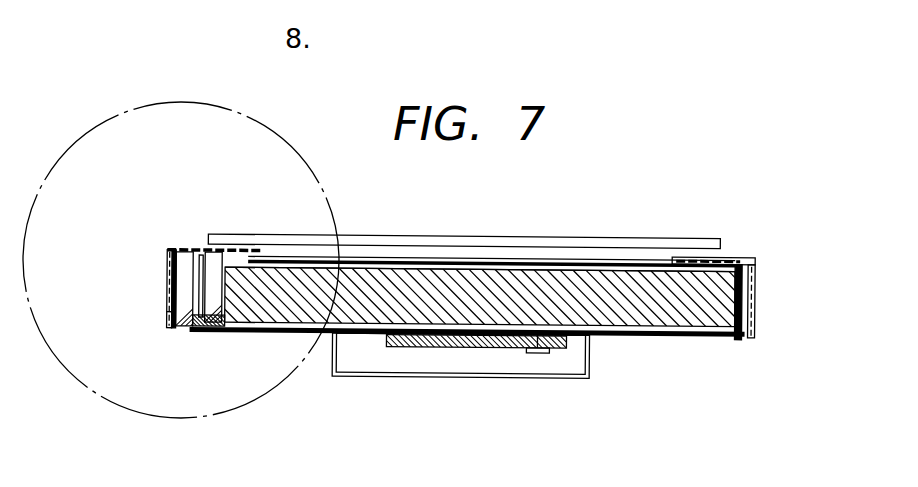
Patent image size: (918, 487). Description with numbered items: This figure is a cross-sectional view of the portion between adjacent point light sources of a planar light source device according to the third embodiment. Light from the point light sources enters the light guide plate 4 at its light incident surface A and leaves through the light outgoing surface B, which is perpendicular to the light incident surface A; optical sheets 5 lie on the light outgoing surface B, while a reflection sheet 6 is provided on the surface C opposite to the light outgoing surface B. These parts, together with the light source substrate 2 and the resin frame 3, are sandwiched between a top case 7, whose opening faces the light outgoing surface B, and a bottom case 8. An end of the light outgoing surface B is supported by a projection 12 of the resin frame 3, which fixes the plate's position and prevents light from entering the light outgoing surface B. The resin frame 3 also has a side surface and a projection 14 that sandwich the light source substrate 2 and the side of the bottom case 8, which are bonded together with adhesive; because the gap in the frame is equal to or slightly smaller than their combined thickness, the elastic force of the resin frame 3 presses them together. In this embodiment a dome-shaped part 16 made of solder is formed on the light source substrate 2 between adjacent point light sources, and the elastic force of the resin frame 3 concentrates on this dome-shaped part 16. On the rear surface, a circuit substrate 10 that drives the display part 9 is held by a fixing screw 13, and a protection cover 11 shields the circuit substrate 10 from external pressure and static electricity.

The light source substrate 2 is at (196, 333).
The resin frame 3 is at (166, 278).
The light guide plate 4 is at (668, 282).
The optical sheets 5 is at (532, 262).
The reflection sheet 6 is at (218, 333).
The top case 7 is at (166, 250).
The bottom case 8 is at (286, 53).
The display part 9 is at (368, 236).
The circuit substrate 10 is at (465, 345).
The protection cover 11 is at (364, 375).
The projection 12 is at (228, 255).
The fixing screw 13 is at (540, 350).
The projection 14 is at (214, 252).
The dome-shaped part 16 is at (197, 252).
The light incident surface A is at (166, 313).
The light outgoing surface B is at (745, 262).
The surface opposite to the light outgoing surface C is at (682, 290).